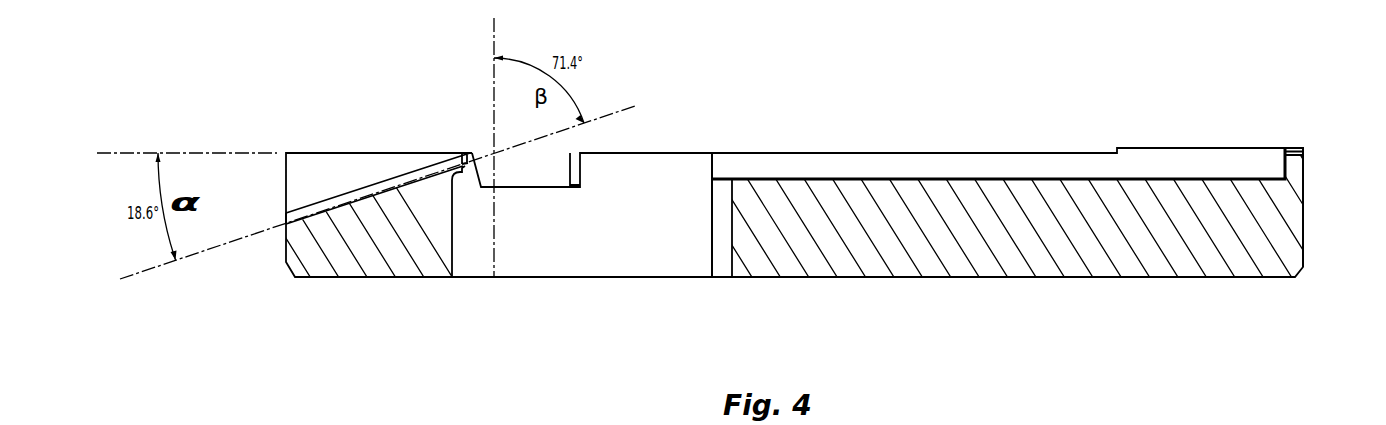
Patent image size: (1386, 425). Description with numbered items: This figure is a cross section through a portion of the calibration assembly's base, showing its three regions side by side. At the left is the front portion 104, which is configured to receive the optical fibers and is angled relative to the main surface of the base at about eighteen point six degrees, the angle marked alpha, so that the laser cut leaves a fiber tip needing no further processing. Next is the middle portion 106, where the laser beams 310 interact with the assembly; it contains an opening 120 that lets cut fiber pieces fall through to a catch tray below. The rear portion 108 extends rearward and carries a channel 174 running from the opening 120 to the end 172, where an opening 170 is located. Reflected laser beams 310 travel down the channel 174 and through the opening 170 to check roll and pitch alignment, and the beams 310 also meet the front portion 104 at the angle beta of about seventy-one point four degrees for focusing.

The front portion 104 is at (452, 302).
The middle portion 106 is at (782, 302).
The rear portion 108 is at (1305, 302).
The opening 120 is at (668, 165).
The opening 170 is at (1305, 150).
The end 172 is at (1305, 185).
The channel 174 is at (1028, 163).
The laser beams 310 is at (491, 30).